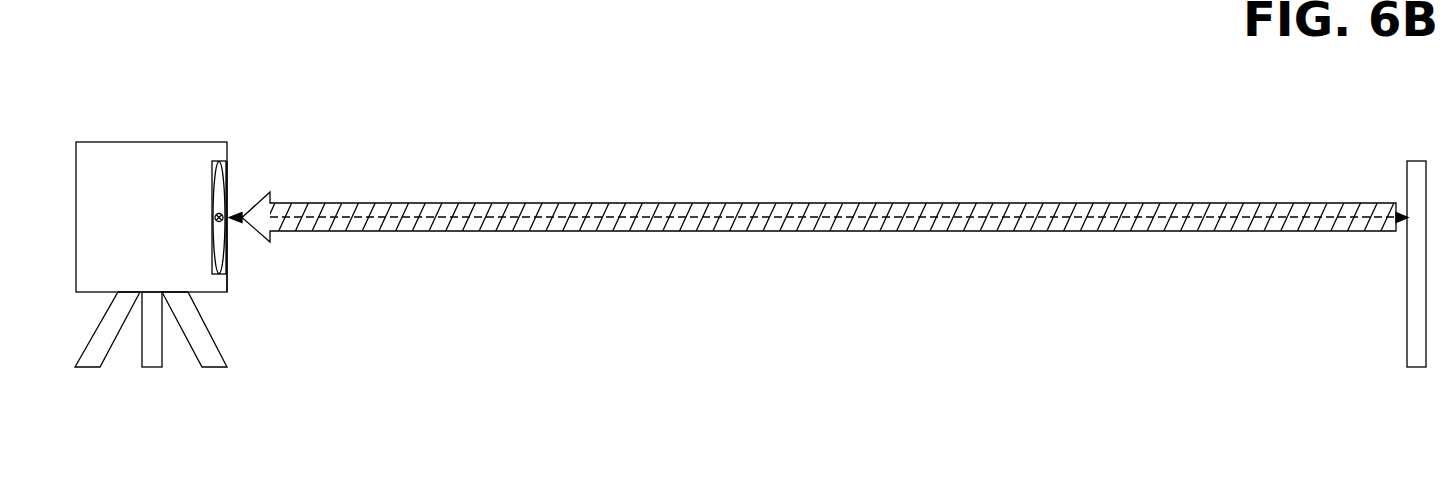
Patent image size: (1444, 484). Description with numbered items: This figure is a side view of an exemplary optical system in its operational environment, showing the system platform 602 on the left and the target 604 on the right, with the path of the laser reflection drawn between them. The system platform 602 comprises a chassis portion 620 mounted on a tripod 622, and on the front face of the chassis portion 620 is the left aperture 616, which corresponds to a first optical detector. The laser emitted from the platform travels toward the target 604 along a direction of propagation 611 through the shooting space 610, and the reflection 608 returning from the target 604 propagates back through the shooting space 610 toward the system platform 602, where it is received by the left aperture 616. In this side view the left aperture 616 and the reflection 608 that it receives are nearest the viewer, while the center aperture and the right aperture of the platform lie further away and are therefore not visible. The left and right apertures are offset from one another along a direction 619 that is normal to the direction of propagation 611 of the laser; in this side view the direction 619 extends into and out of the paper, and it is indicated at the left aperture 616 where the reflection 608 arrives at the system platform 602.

The system platform 602 is at (188, 142).
The target 604 is at (1417, 367).
The reflection 608 is at (583, 203).
The shooting space 610 is at (858, 138).
The direction of propagation 611 is at (1092, 217).
The left aperture 616 is at (220, 162).
The direction normal to the direction of propagation 619 is at (222, 221).
The chassis portion 620 is at (227, 278).
The tripod 622 is at (198, 317).